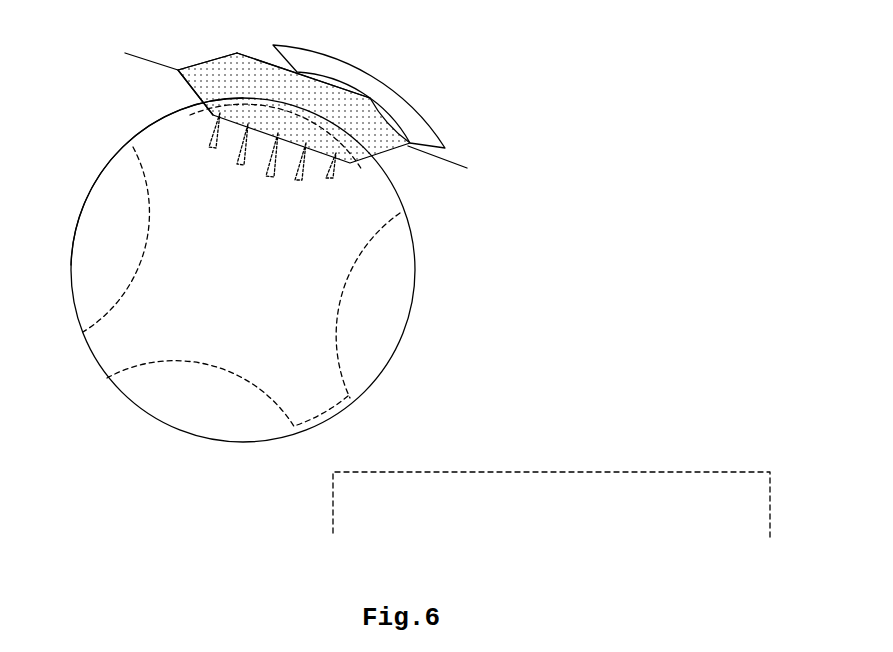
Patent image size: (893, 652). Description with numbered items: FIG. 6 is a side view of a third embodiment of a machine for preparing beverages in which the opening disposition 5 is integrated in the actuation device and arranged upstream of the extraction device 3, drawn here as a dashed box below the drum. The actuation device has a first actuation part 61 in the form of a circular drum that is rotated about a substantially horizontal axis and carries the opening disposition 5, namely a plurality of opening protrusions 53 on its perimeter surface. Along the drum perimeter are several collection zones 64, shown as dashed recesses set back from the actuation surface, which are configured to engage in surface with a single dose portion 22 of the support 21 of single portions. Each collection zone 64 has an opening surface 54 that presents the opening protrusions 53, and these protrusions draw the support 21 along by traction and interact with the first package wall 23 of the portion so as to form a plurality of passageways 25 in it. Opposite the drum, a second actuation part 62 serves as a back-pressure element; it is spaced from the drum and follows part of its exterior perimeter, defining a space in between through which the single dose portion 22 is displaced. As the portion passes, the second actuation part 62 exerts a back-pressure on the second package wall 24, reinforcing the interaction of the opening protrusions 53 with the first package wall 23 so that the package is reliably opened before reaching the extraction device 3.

The extraction device 3 is at (551, 497).
The opening disposition 5 is at (225, 270).
The support of single portions 21 is at (141, 71).
The single dose portion 22 is at (181, 56).
The first package wall 23 is at (281, 108).
The second package wall 24 is at (303, 71).
The passageways 25 is at (280, 137).
The opening protrusions 53 is at (309, 164).
The opening surfaces 54 is at (353, 278).
The first actuation part 61 is at (157, 181).
The second actuation part 62 is at (370, 106).
The collection zones 64 is at (146, 201).